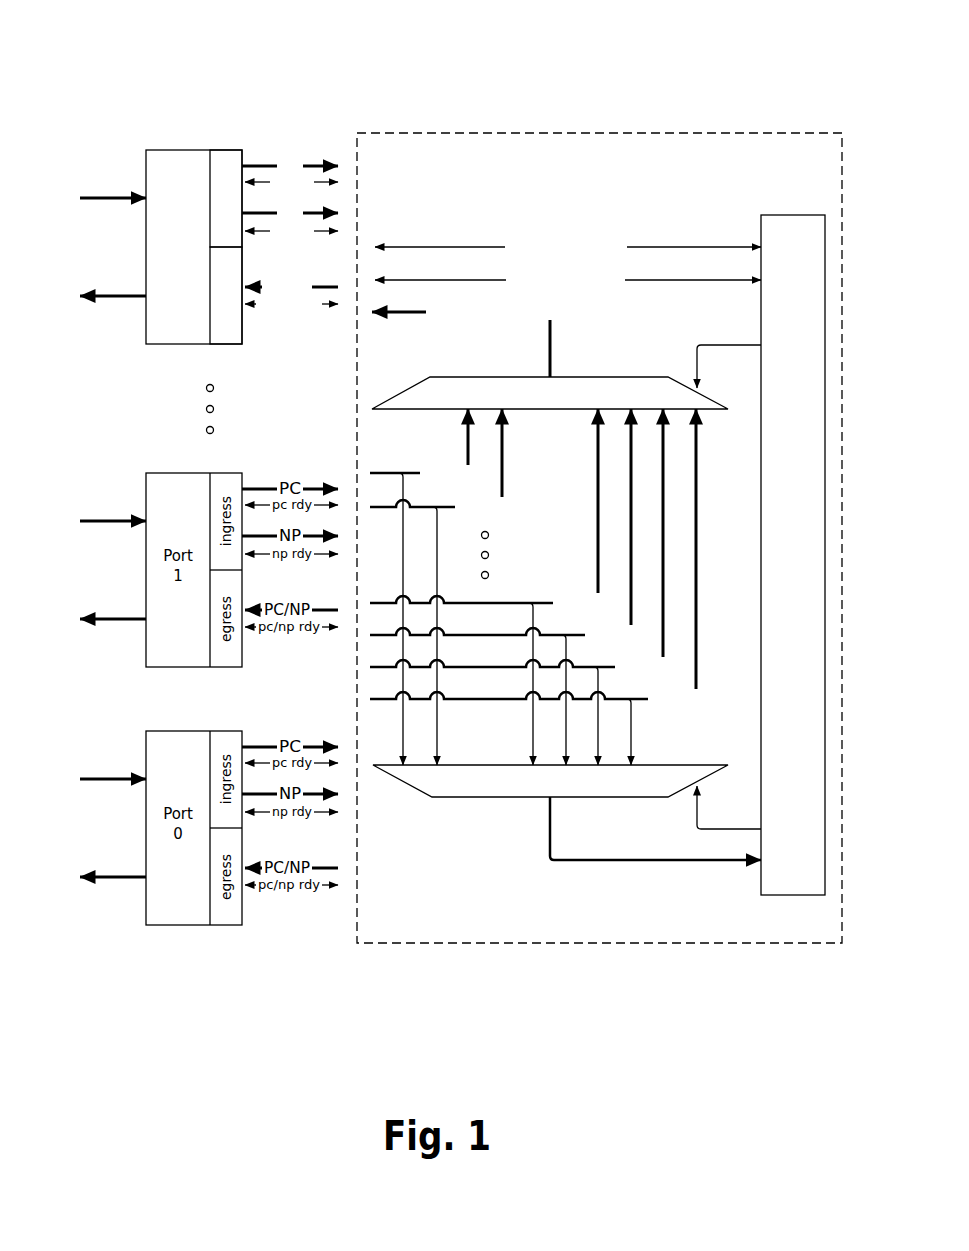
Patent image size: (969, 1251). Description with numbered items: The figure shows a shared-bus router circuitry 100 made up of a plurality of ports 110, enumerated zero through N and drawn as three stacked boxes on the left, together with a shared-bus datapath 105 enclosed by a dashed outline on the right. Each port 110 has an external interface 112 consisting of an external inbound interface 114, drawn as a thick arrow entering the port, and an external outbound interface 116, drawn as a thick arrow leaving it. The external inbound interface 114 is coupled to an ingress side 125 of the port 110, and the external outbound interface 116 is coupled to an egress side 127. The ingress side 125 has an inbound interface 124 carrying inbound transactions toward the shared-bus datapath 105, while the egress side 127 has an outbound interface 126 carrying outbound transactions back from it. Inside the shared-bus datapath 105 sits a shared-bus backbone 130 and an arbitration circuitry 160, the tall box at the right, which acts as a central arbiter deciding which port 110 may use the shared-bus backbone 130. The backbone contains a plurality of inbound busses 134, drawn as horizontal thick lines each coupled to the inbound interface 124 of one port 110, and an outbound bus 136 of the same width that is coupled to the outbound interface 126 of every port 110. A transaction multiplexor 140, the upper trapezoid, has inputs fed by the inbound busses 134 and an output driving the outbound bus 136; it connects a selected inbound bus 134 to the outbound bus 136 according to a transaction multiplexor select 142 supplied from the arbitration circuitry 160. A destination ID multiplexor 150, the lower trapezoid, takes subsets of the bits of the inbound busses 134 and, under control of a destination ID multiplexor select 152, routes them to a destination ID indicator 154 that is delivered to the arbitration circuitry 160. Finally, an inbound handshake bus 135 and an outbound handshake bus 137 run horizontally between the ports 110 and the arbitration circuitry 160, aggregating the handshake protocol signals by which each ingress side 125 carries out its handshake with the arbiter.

The shared-bus router circuitry 100 is at (172, 1017).
The shared-bus datapath 105 is at (347, 952).
The port 110 is at (191, 224).
The external interface 112 is at (95, 255).
The external inbound interface 114 is at (137, 177).
The external outbound interface 116 is at (137, 313).
The inbound interface 124 is at (253, 158).
The ingress side 125 is at (227, 138).
The outbound interface 126 is at (253, 320).
The egress side 127 is at (227, 352).
The shared-bus backbone 130 is at (491, 537).
The inbound bus 134 is at (383, 552).
The inbound handshake bus 135 is at (403, 227).
The outbound bus 136 is at (422, 292).
The outbound handshake bus 137 is at (468, 260).
The transaction multiplexor 140 is at (630, 357).
The transaction multiplexor select 142 is at (713, 323).
The destination ID multiplexor 150 is at (533, 813).
The destination ID multiplexor select 152 is at (679, 830).
The destination ID indicator 154 is at (712, 878).
The arbitration circuitry 160 is at (793, 195).